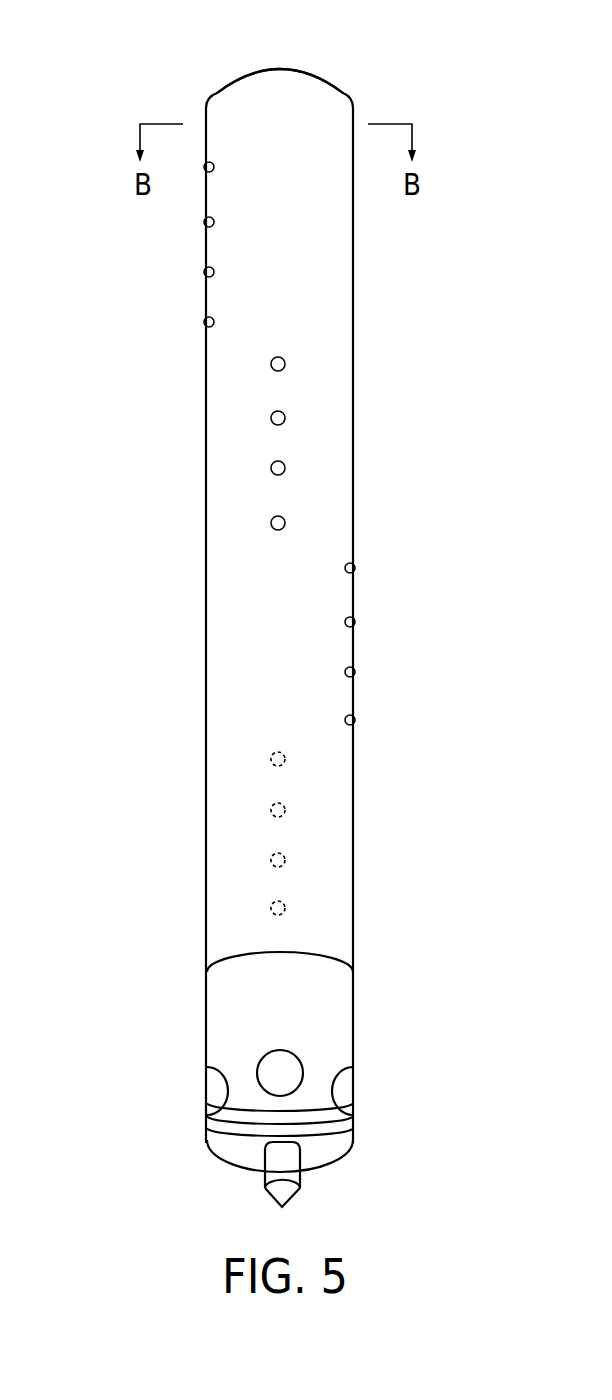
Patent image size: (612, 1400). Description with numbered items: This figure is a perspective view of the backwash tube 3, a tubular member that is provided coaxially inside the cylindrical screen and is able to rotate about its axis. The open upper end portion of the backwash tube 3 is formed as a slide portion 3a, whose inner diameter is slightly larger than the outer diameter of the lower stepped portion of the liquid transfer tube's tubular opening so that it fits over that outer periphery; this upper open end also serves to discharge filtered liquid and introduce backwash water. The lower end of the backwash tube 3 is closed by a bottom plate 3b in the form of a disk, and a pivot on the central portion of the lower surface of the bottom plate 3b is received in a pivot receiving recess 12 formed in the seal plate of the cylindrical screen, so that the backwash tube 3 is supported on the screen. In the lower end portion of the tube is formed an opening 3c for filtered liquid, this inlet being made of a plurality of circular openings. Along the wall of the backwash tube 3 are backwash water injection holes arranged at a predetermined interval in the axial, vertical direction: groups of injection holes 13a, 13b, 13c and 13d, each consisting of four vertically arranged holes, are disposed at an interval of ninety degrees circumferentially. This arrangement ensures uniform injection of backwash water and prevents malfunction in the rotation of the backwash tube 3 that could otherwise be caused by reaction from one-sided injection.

The backwash tube 3 is at (398, 293).
The slide portion 3a is at (307, 88).
The bottom plate 3b is at (348, 1133).
The opening for filtered liquid 3c is at (297, 1077).
The pivot receiving recess 12 is at (287, 1175).
The group of injection holes 13a is at (204, 168).
The group of injection holes 13b is at (285, 366).
The group of injection holes 13c is at (354, 570).
The group of injection holes 13d is at (271, 760).